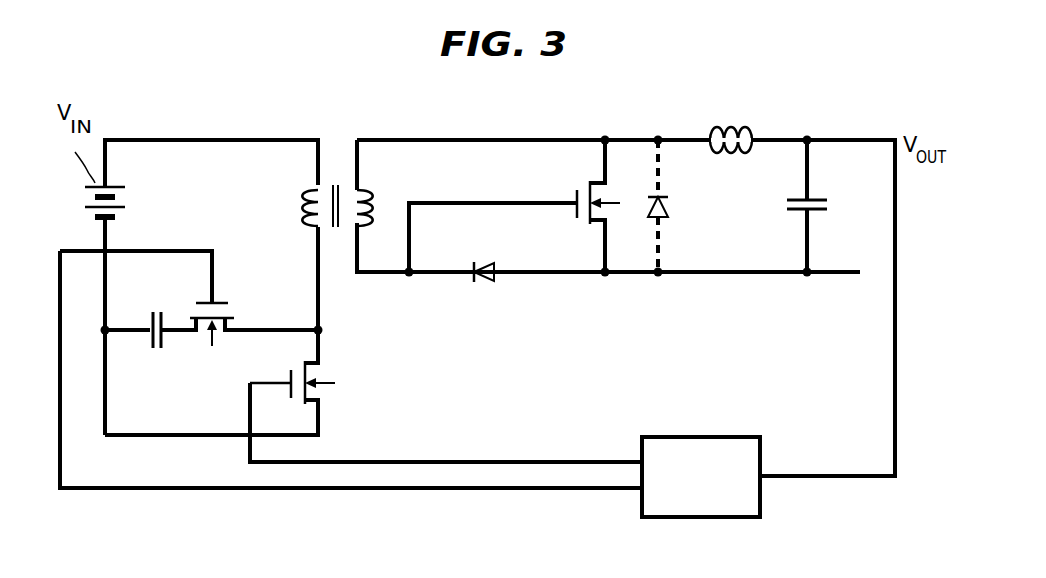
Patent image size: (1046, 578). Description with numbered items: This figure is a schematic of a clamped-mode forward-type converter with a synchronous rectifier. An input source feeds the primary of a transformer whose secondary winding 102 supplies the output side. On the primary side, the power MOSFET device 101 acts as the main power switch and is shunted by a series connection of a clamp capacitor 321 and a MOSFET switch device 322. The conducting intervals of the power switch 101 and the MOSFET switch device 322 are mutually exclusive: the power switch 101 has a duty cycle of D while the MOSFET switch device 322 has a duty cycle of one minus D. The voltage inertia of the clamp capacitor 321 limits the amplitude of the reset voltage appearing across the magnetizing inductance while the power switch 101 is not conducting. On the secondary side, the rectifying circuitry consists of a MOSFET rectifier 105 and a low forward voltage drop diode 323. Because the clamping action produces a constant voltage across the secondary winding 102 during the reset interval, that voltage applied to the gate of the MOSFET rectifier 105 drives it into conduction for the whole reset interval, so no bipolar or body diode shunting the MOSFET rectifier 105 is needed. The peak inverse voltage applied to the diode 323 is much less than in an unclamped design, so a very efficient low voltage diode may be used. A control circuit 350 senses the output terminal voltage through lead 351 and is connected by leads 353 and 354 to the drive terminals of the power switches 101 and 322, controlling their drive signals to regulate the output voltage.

The power MOSFET device 101 is at (314, 382).
The secondary winding 102 is at (371, 206).
The MOSFET rectifier 105 is at (577, 192).
The clamp capacitor 321 is at (156, 310).
The MOSFET switch device 322 is at (212, 346).
The diode 323 is at (483, 285).
The control circuit 350 is at (718, 437).
The lead 351 is at (851, 154).
The lead 353 is at (642, 452).
The lead 354 is at (760, 497).